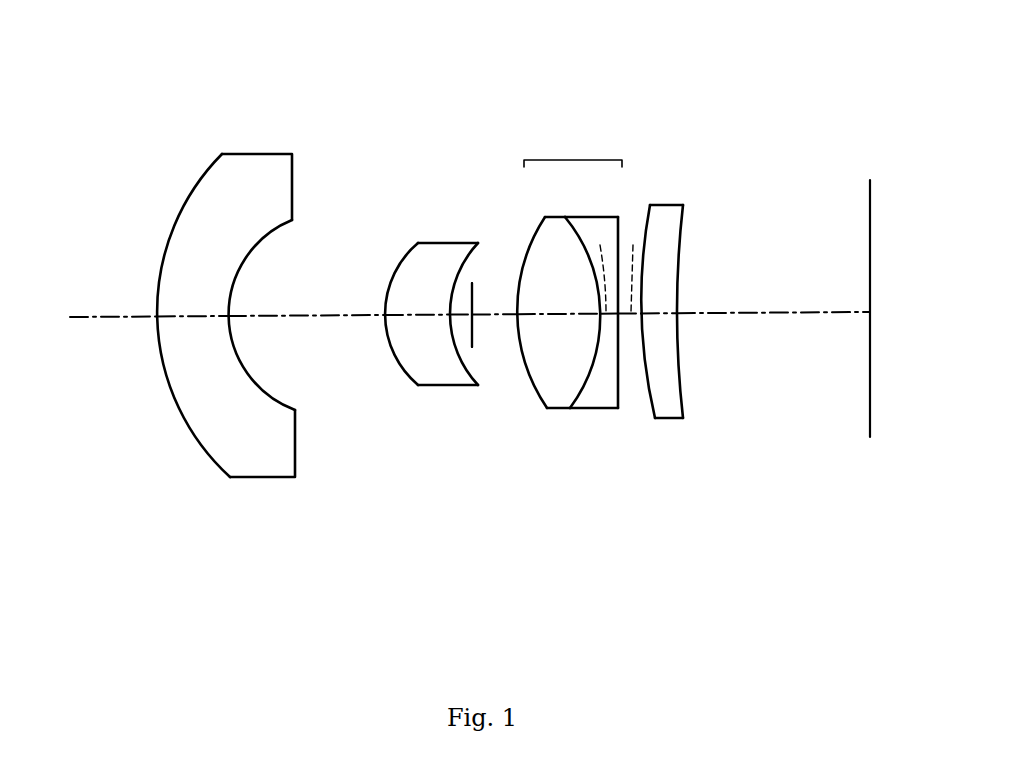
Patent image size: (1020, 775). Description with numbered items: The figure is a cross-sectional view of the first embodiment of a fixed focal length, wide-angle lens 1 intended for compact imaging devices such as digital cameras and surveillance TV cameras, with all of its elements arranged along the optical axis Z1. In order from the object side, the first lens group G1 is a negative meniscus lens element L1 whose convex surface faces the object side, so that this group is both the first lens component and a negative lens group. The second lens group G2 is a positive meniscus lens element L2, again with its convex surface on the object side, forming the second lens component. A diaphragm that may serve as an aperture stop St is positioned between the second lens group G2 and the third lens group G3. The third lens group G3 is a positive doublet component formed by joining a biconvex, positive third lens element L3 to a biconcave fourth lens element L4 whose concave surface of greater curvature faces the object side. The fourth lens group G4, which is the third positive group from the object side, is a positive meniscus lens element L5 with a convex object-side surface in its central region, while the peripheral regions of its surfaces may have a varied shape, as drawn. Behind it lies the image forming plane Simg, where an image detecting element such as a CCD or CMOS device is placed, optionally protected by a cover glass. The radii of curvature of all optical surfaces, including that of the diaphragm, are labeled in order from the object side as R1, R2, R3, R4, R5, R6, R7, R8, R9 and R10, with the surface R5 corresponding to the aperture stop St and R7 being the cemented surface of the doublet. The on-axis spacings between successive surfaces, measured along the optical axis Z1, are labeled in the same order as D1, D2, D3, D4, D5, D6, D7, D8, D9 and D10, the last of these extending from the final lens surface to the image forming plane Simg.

The wide-angle lens 1 is at (600, 108).
The optical axis Z1 is at (83, 324).
The first lens group G1 is at (260, 153).
The first lens element L1 is at (235, 342).
The second lens group G2 is at (447, 242).
The second lens element L2 is at (443, 337).
The third lens group G3 is at (571, 307).
The third lens element L3 is at (558, 216).
The fourth lens element L4 is at (603, 216).
The fourth lens group G4 is at (670, 205).
The fifth lens element L5 is at (679, 334).
The aperture stop St is at (475, 285).
The image forming plane Simg is at (867, 190).
The first optical surface R1 is at (207, 470).
The second optical surface R2 is at (250, 370).
The third optical surface R3 is at (400, 372).
The fourth optical surface R4 is at (478, 372).
The fifth optical surface R5 is at (478, 325).
The sixth optical surface R6 is at (532, 390).
The seventh optical surface R7 is at (588, 390).
The eighth optical surface R8 is at (620, 395).
The ninth optical surface R9 is at (650, 405).
The tenth optical surface R10 is at (688, 385).
The first on-axis surface spacing D1 is at (192, 302).
The second on-axis surface spacing D2 is at (306, 302).
The third on-axis surface spacing D3 is at (417, 300).
The fourth on-axis surface spacing D4 is at (451, 301).
The fifth on-axis surface spacing D5 is at (494, 300).
The sixth on-axis surface spacing D6 is at (558, 299).
The seventh on-axis surface spacing D7 is at (601, 267).
The eighth on-axis surface spacing D8 is at (635, 264).
The ninth on-axis surface spacing D9 is at (659, 298).
The tenth on-axis surface spacing D10 is at (773, 298).